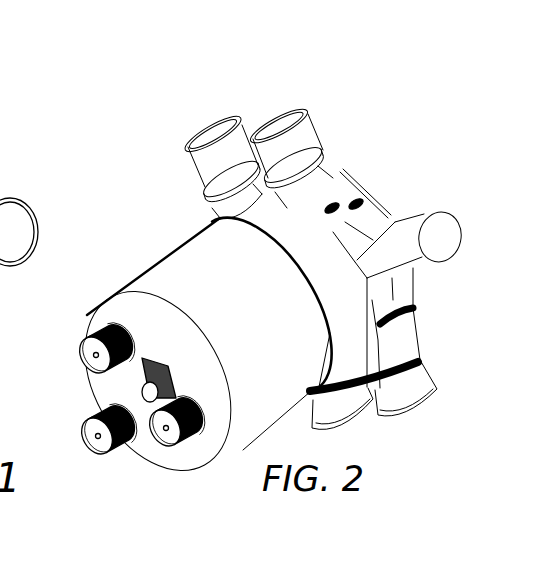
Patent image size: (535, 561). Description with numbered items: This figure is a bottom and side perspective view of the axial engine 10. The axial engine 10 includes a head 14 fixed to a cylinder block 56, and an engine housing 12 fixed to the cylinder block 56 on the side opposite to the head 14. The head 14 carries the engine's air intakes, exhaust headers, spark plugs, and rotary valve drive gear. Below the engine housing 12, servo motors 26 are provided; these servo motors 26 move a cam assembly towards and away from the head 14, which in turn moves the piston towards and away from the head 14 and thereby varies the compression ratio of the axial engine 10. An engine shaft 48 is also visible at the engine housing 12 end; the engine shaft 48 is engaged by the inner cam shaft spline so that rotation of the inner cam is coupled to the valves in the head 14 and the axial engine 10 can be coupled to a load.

The axial engine 10 is at (136, 131).
The engine housing 12 is at (262, 316).
The head 14 is at (372, 222).
The servo motors 26 is at (86, 347).
The engine shaft 48 is at (137, 392).
The cylinder block 56 is at (324, 258).